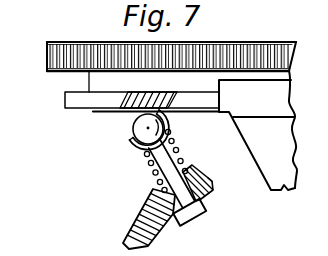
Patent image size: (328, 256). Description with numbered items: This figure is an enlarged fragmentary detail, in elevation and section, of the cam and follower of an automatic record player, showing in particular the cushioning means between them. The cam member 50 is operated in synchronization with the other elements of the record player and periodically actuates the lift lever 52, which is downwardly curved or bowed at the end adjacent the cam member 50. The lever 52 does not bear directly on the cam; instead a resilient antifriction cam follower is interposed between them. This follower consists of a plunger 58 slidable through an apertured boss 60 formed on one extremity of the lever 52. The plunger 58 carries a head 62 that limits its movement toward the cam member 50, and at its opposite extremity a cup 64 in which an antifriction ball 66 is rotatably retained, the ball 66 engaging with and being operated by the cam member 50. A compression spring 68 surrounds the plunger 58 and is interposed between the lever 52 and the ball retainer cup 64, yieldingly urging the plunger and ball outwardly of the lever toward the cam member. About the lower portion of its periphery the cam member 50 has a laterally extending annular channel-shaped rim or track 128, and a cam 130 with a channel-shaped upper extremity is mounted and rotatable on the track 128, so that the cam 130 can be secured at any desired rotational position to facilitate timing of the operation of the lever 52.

The cam member 50 is at (100, 80).
The channel-shaped rim or track 128 is at (72, 101).
The antifriction ball 66 is at (145, 124).
The cup 64 is at (130, 140).
The plunger 58 is at (153, 161).
The compression spring 68 is at (179, 153).
The apertured boss 60 is at (212, 188).
The head 62 is at (196, 218).
The lift lever 52 is at (152, 228).
The cam 130 is at (282, 183).